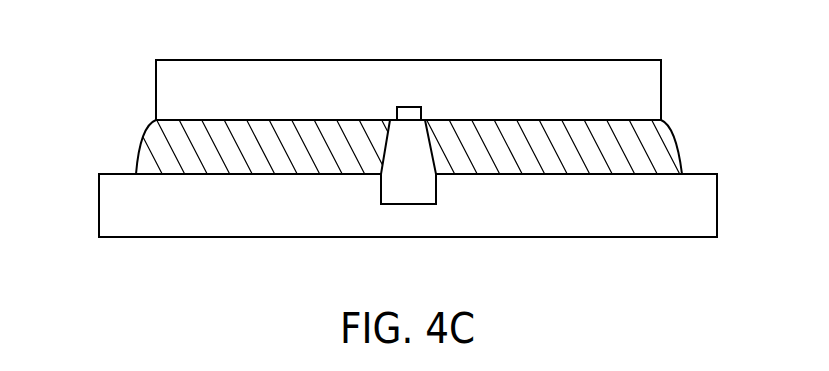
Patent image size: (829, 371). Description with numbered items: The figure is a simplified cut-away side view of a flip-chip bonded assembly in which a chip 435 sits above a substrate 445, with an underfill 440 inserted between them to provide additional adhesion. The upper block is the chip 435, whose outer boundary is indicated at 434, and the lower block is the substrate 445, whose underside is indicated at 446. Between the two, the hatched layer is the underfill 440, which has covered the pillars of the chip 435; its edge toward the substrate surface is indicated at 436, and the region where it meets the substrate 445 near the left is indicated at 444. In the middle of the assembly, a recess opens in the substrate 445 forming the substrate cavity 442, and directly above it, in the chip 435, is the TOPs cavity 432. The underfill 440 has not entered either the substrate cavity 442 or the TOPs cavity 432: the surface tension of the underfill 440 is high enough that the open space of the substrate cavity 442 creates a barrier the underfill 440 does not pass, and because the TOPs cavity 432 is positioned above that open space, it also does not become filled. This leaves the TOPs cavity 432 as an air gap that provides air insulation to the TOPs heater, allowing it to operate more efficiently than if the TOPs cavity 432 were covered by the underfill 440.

The TOPs cavity 432 is at (408, 107).
The top layer / die 434 is at (242, 60).
The chip 435 is at (505, 102).
The hatched bonding layer edge 436 is at (150, 120).
The underfill 440 is at (679, 147).
The substrate cavity 442 is at (408, 205).
The substrate top surface layer 444 is at (114, 171).
The substrate 445 is at (350, 221).
The substrate bottom surface 446 is at (242, 238).